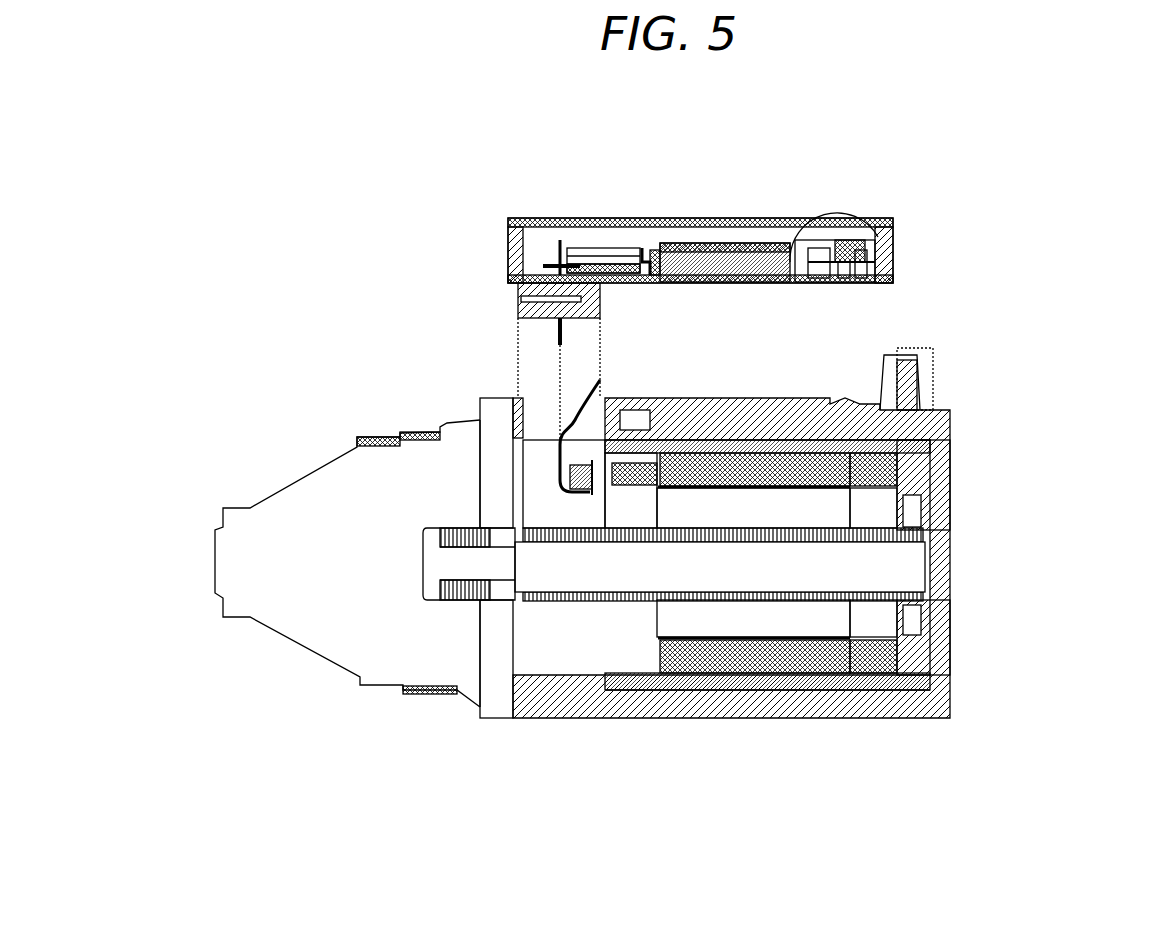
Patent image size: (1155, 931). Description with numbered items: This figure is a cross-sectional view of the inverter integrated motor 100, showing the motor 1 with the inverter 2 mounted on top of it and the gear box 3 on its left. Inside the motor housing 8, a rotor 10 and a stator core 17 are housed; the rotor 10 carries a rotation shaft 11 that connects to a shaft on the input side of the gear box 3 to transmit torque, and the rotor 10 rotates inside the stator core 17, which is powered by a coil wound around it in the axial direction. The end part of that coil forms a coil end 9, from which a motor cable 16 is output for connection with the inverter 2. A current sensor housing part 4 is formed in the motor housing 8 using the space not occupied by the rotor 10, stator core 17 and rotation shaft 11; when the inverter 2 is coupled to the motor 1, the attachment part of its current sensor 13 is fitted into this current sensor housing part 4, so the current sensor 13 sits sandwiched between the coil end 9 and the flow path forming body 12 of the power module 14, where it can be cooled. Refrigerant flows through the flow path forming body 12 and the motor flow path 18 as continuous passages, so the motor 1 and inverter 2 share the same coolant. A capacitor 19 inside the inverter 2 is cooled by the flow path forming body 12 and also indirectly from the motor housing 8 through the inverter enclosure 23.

The inverter integrated motor 100 is at (255, 162).
The motor 1 is at (1008, 583).
The inverter 2 is at (978, 233).
The gear box 3 is at (340, 438).
The current sensor housing part 4 is at (546, 412).
The motor housing 8 is at (547, 723).
The coil end 9 is at (880, 478).
The rotor 10 is at (840, 620).
The rotation shaft 11 is at (422, 600).
The flow path forming body 12 is at (623, 250).
The current sensor 13 is at (543, 300).
The power module 14 is at (593, 268).
The motor cable 16 is at (600, 393).
The stator core 17 is at (765, 668).
The motor flow path 18 is at (790, 437).
The capacitor 19 is at (725, 270).
The inverter enclosure 23 is at (508, 220).